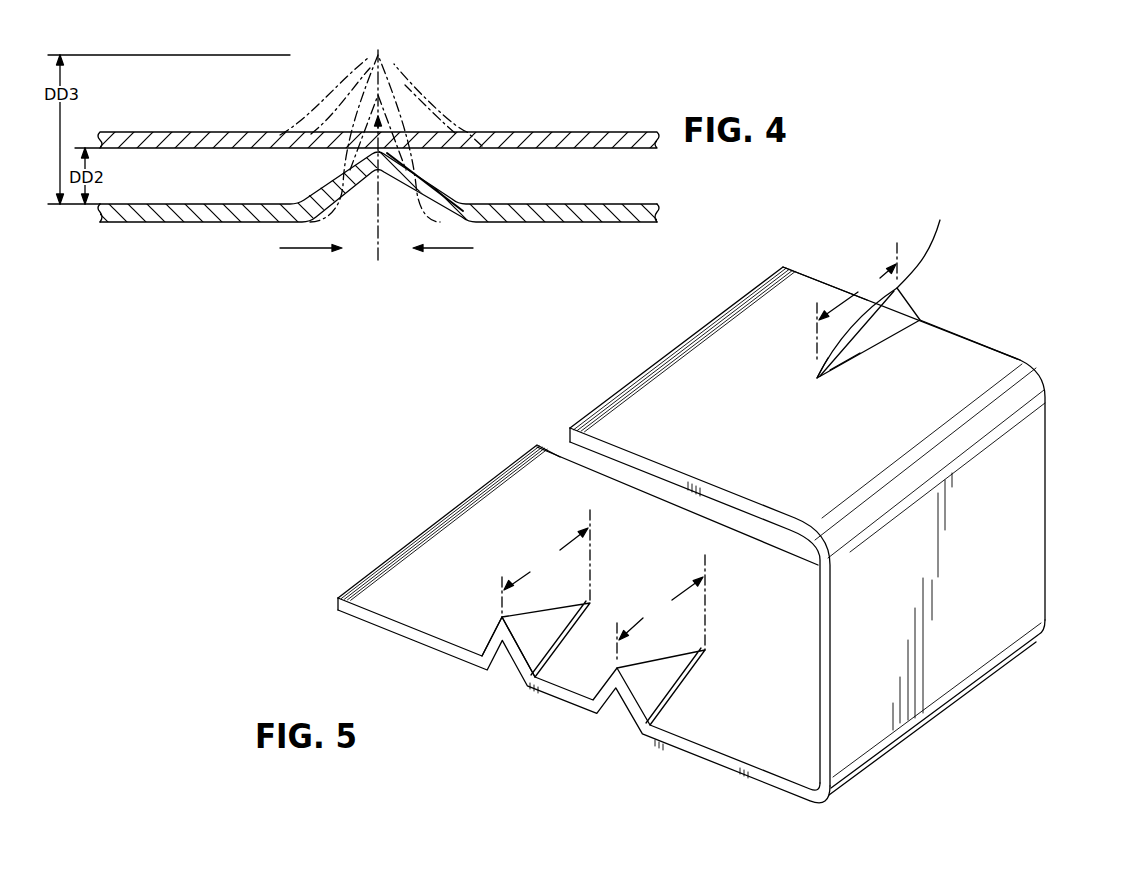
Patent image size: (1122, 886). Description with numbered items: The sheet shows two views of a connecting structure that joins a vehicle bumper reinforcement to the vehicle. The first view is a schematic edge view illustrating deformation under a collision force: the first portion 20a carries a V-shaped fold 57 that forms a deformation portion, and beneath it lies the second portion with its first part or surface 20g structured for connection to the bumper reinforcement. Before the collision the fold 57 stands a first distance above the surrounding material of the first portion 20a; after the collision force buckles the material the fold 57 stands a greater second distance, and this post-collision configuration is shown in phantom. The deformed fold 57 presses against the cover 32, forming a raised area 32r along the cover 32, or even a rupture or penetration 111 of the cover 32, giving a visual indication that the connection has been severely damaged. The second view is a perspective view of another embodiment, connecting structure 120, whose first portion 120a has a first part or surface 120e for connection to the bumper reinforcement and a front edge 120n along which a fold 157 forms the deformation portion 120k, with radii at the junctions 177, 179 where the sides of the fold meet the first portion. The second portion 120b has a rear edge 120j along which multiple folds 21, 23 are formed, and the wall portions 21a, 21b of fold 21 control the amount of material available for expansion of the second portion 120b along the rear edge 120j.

In FIG. 4, the first portion 20a is at (230, 222).
In FIG. 4, the first part or surface 20g is at (380, 212).
In FIG. 4, the fold 57 is at (403, 117).
In FIG. 4, the rupture or penetration 111 is at (362, 75).
In FIG. 4, the cover 32 is at (300, 117).
In FIG. 4, the raised area 32r is at (420, 80).
In FIG. 5, the connecting structure 120 is at (712, 498).
In FIG. 5, the first portion 120a is at (960, 353).
In FIG. 5, the second portion 120b is at (660, 540).
In FIG. 5, the first part or surface 120e is at (980, 380).
In FIG. 5, the second portion rear edge 120j is at (397, 635).
In FIG. 5, the deformation portion 120k is at (920, 307).
In FIG. 5, the front edge 120n is at (816, 282).
In FIG. 5, the fold 157 is at (872, 322).
In FIG. 5, the junction 177 is at (817, 375).
In FIG. 5, the junction 179 is at (866, 362).
In FIG. 5, the fold 21 is at (510, 680).
In FIG. 5, the wall portion 21a is at (486, 643).
In FIG. 5, the wall portion 21b is at (535, 643).
In FIG. 5, the fold 23 is at (622, 720).